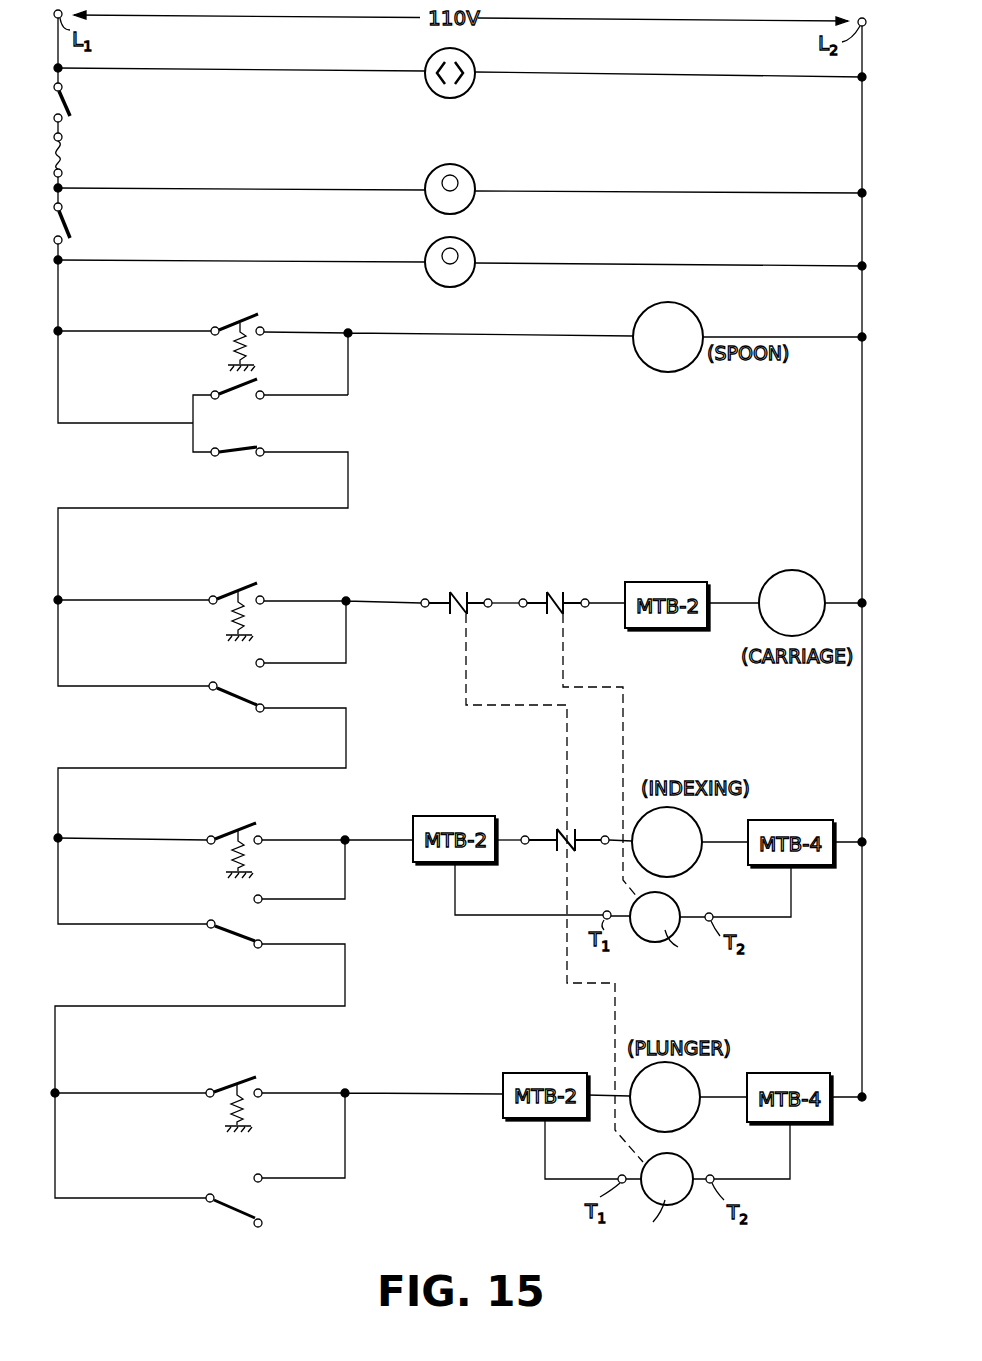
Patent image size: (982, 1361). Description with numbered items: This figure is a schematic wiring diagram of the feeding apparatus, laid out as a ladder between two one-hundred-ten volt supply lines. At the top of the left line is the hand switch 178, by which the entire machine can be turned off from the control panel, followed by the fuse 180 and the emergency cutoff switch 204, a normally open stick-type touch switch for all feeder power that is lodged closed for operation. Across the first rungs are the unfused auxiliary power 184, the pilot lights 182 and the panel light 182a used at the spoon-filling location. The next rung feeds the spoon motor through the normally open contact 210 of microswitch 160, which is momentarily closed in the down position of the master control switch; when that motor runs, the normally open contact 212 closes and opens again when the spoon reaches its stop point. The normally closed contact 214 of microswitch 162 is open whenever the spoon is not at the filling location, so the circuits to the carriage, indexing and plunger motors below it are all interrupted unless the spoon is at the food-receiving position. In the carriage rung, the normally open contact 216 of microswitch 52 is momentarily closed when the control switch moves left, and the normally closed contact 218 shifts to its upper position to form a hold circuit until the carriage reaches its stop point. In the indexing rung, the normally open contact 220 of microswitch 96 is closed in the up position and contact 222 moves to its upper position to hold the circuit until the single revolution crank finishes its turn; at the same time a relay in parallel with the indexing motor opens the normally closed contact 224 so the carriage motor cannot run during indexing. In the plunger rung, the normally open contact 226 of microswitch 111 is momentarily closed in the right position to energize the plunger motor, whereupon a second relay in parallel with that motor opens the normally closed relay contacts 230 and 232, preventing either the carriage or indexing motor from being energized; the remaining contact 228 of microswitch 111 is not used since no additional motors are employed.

The hand switch 178 is at (72, 110).
The fuse 180 is at (60, 150).
The emergency cutoff switch 204 is at (72, 232).
The unfused auxiliary power 184 is at (446, 96).
The pilot lights 182 is at (466, 174).
The panel light 182a is at (466, 248).
The normally open contact 210 is at (250, 315).
The microswitch 160 is at (206, 343).
The normally open contact 212 is at (226, 386).
The microswitch 162 is at (250, 423).
The normally closed contact 214 is at (236, 455).
The normally open contact 216 is at (238, 586).
The microswitch 52 is at (198, 638).
The normally closed contact 218 is at (232, 697).
The normally closed relay contact 232 is at (468, 594).
The normally closed contact 224 is at (565, 594).
The normally open contact 220 is at (245, 823).
The microswitch 96 is at (213, 872).
The normally closed contact 222 is at (233, 938).
The normally closed relay contact 230 is at (572, 831).
The normally open contact 226 is at (250, 1077).
The microswitch 111 is at (210, 1136).
The contact 228 is at (232, 1214).